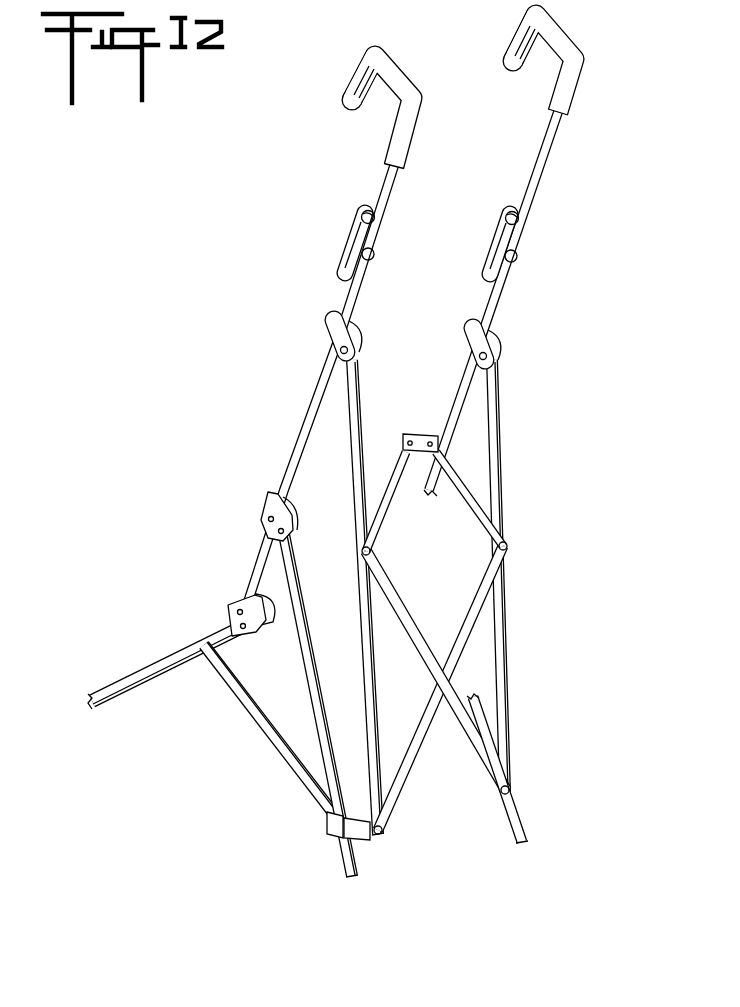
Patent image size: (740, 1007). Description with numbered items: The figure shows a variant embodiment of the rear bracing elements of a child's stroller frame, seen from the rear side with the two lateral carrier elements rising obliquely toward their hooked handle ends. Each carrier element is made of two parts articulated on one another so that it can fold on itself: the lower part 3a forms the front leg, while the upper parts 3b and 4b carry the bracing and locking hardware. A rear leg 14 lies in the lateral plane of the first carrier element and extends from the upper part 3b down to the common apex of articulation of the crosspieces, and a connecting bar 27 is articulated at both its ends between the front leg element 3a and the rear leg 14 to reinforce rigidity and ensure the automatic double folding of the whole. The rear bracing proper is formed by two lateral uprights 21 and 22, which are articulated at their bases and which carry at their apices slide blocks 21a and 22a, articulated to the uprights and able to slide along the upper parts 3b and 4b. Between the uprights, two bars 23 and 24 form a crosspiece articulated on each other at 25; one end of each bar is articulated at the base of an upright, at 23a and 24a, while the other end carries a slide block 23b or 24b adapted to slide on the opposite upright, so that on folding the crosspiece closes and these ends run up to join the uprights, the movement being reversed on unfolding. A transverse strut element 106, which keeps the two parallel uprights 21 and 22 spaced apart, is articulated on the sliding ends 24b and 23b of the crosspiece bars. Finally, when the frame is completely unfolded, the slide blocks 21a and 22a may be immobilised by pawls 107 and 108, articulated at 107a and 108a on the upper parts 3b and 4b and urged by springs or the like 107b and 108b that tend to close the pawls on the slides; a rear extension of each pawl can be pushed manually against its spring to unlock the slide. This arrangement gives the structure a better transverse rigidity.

The lower part of carrier element 3a is at (146, 674).
The upper part of carrier element 3b is at (381, 184).
The upper part of carrier element 4b is at (566, 144).
The rear leg 14 is at (303, 673).
The lateral upright 21 is at (357, 406).
The slide block 21a is at (328, 333).
The lateral upright 22 is at (498, 404).
The slide block 22a is at (468, 343).
The crosspiece bar 23 is at (400, 789).
The base articulation of bar 23a is at (385, 836).
The slide block 23b is at (508, 541).
The crosspiece bar 24 is at (486, 757).
The base articulation of bar 24a is at (510, 790).
The slide block 24b is at (362, 552).
The crosspiece articulation 25 is at (440, 686).
The connecting bar 27 is at (268, 735).
The transverse strut element 106 is at (386, 500).
The pawl 107 is at (332, 251).
The pawl articulation 107a is at (370, 260).
The spring 107b is at (372, 216).
The pawl 108 is at (481, 236).
The pawl articulation 108a is at (516, 262).
The spring 108b is at (515, 220).